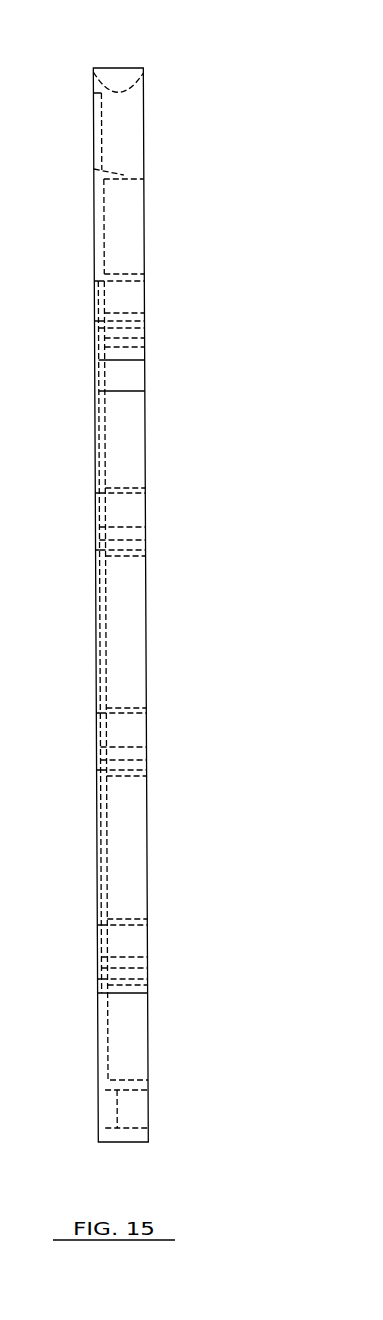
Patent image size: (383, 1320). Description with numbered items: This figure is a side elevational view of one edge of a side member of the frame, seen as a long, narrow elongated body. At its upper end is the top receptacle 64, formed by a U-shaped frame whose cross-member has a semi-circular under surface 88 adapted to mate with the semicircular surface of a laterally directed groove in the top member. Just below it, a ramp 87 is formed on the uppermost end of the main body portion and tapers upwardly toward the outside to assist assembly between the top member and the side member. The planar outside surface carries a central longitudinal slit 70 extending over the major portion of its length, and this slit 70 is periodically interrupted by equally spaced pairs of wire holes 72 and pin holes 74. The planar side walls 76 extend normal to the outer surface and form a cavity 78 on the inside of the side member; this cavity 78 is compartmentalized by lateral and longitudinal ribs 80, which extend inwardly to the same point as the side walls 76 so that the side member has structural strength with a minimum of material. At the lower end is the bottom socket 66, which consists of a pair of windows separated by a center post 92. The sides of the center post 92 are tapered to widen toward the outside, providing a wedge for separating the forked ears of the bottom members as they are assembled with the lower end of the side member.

The top receptacle 64 is at (121, 142).
The bottom socket 66 is at (110, 1105).
The central longitudinal slit 70 is at (98, 450).
The wire holes 72 is at (135, 332).
The pin holes 74 is at (132, 300).
The side walls 76 is at (145, 403).
The cavity 78 is at (125, 234).
The ribs 80 is at (118, 487).
The ramp 87 is at (125, 173).
The semi-circular under surface 88 is at (121, 92).
The center post 92 is at (115, 1115).